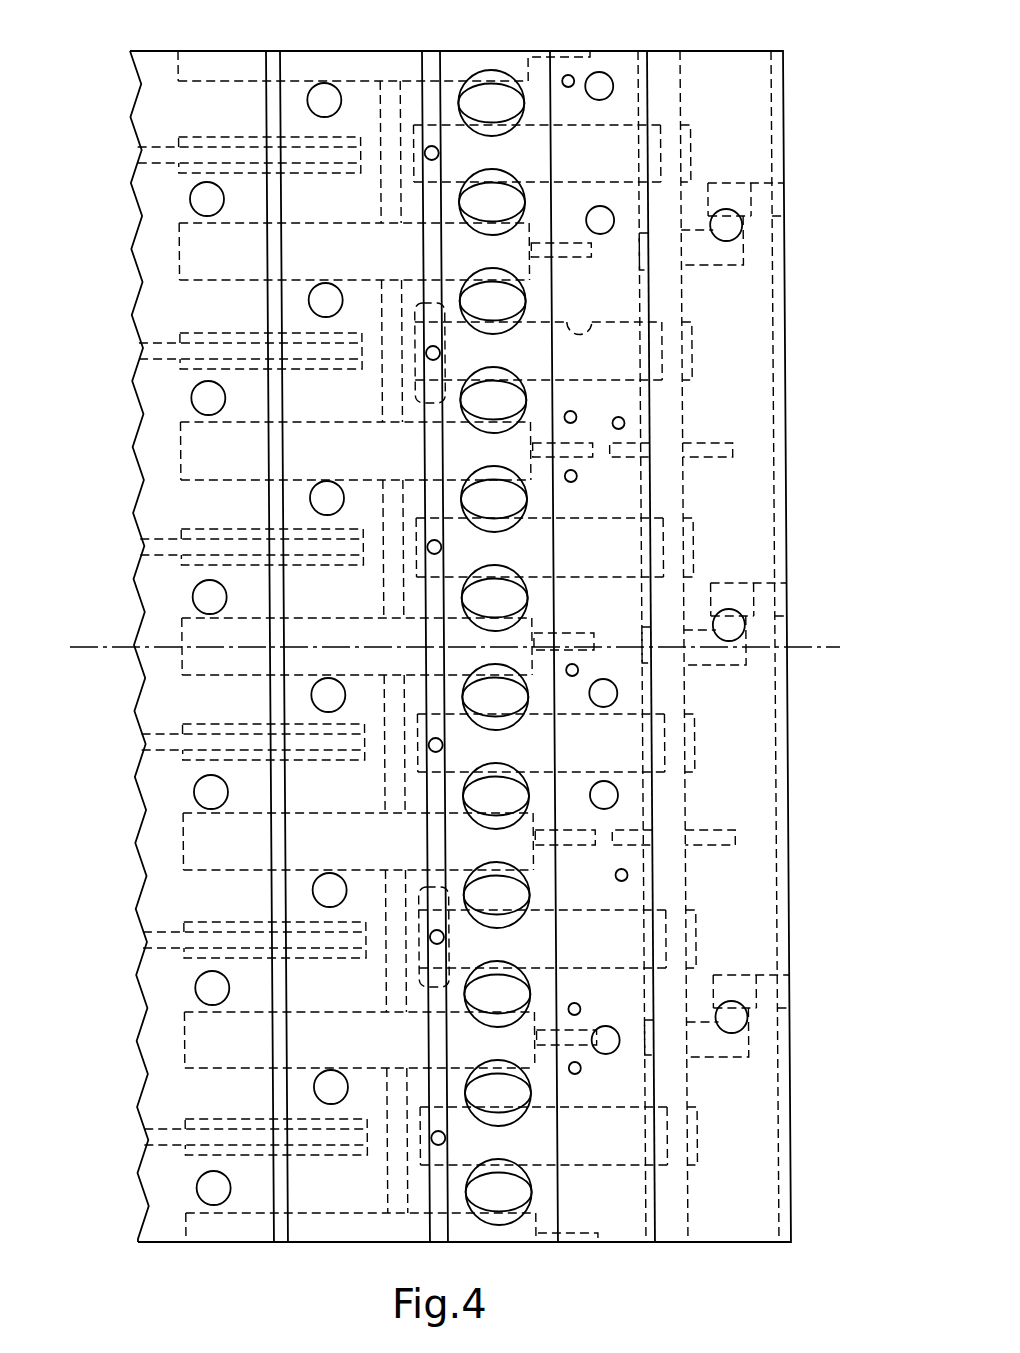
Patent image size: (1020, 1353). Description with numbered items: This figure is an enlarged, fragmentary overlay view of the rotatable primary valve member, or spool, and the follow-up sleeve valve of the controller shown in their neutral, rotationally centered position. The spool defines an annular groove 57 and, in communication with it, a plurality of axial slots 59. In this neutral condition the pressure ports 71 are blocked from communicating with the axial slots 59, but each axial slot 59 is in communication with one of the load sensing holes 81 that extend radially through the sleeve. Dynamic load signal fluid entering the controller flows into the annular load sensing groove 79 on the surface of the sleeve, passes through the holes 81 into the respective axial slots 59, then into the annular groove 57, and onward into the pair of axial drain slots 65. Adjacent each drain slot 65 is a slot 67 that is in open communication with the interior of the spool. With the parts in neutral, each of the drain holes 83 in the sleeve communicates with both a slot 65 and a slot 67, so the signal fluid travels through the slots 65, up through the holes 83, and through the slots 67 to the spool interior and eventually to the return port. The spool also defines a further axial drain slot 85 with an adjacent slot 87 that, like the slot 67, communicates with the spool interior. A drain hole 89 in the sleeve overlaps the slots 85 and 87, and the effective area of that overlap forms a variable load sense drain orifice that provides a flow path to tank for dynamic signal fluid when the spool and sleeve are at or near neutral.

The annular groove 57 is at (670, 413).
The axial slots 59 is at (590, 322).
The axial drain slots 65 is at (711, 257).
The slot 67 is at (720, 190).
The pressure ports 71 is at (600, 72).
The annular load sensing groove 79 is at (428, 62).
The load sensing holes 81 is at (426, 158).
The drain holes 83 is at (727, 228).
The axial drain slot 85 is at (719, 658).
The slot 87 is at (723, 590).
The drain hole 89 is at (724, 617).